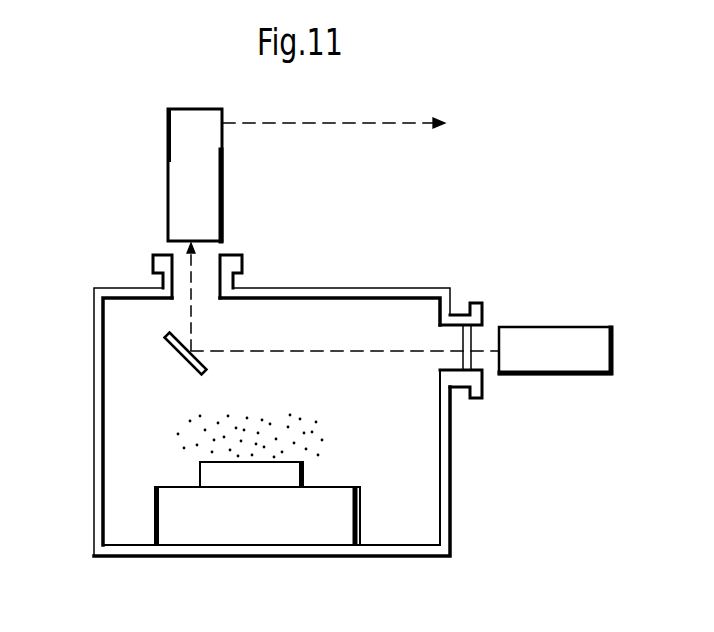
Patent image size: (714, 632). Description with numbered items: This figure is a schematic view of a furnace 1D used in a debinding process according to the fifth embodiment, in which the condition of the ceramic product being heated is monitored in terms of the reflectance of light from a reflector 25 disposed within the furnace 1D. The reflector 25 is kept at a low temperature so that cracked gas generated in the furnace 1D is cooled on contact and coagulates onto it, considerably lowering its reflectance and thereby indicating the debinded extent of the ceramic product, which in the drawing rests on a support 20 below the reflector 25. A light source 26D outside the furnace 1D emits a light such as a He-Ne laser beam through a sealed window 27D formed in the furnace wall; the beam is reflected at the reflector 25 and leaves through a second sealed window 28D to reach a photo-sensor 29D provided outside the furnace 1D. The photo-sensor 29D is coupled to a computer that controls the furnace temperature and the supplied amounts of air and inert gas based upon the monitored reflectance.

The furnace 1D is at (95, 494).
The substrate holder / sample stage 20 is at (228, 482).
The reflector 25 is at (168, 340).
The light source 26D is at (597, 374).
The sealed window 27D is at (470, 363).
The sealed window 28D is at (165, 268).
The photo-sensor 29D is at (223, 203).